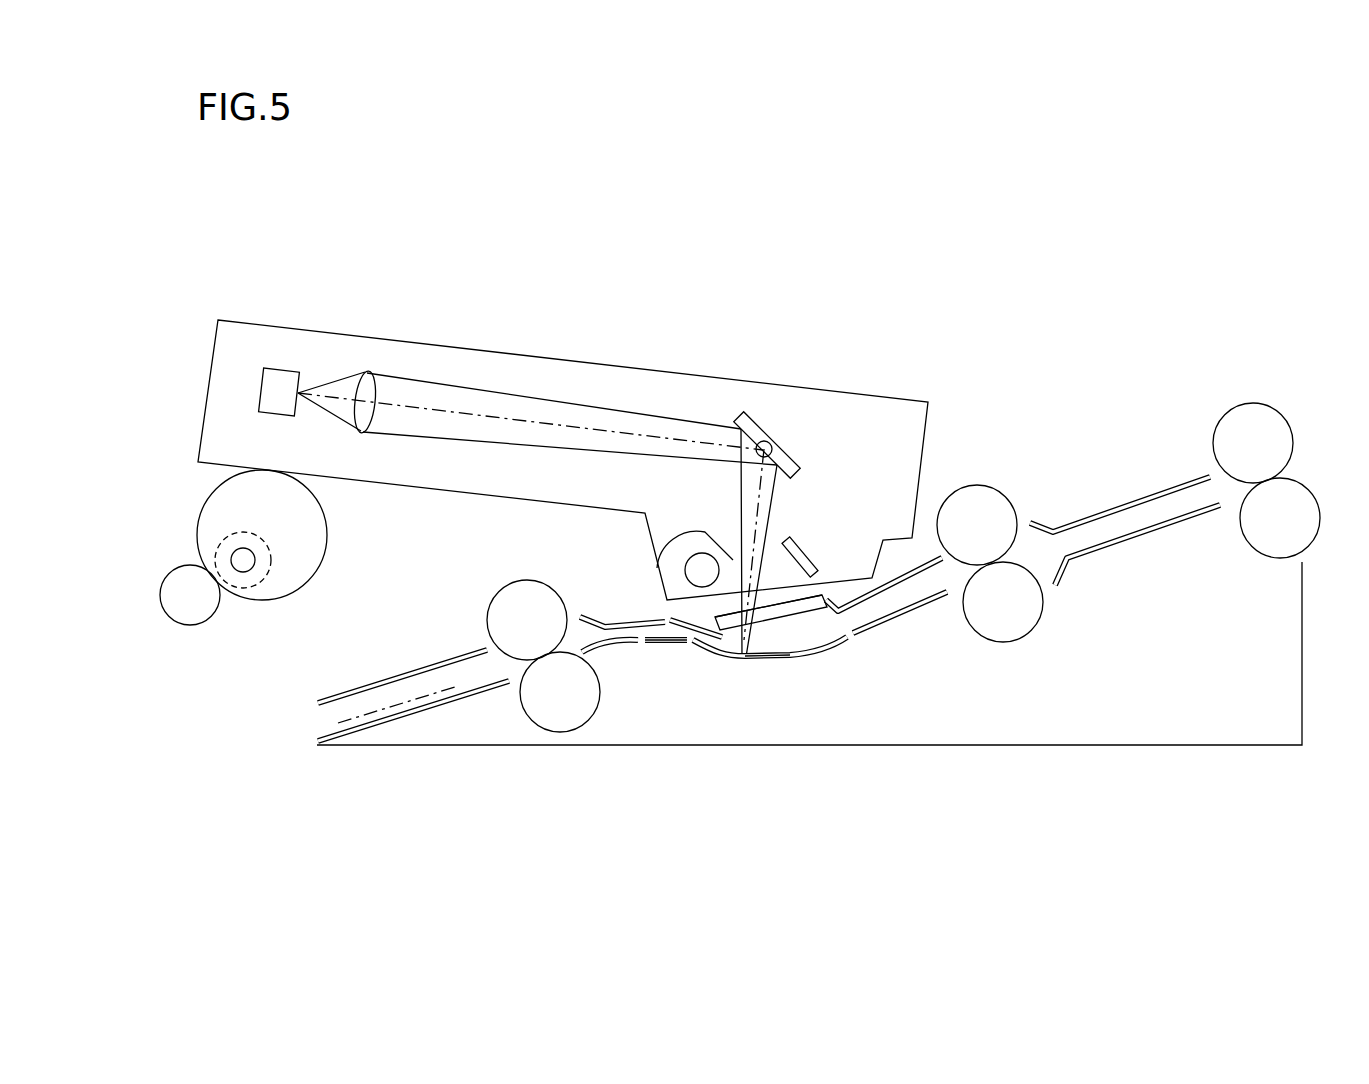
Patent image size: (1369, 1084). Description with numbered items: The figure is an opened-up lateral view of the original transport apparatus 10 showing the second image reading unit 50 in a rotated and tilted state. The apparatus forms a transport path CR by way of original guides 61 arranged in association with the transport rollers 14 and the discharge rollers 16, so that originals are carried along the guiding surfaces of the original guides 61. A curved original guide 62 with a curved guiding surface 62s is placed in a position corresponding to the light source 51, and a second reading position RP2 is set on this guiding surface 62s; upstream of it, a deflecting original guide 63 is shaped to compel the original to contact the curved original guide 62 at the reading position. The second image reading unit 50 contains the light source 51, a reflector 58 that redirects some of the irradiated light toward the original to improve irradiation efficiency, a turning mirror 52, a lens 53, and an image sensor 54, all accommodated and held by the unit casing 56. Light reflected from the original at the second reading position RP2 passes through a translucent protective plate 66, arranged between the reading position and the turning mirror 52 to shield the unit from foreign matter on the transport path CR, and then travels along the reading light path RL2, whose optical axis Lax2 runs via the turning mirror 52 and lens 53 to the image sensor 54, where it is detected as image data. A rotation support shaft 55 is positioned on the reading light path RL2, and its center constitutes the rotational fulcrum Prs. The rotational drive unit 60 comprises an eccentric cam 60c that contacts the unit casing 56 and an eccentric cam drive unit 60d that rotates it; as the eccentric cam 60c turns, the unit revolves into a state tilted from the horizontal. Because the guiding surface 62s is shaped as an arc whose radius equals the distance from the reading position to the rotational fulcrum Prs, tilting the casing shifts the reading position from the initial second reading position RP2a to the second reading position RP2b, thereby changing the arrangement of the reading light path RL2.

The original transport apparatus 10 is at (1103, 451).
The transport rollers 14 is at (563, 710).
The discharge rollers 16 is at (1267, 535).
The second image reading unit 50 is at (196, 342).
The light source 51 is at (700, 568).
The turning mirror 52 is at (748, 421).
The lens 53 is at (358, 387).
The image sensor 54 is at (279, 380).
The rotation support shaft 55 is at (771, 444).
The unit casing 56 is at (498, 348).
The reflector 58 is at (800, 552).
The rotational drive unit 60 is at (230, 653).
The eccentric cam 60c is at (267, 592).
The eccentric cam drive unit 60d is at (180, 622).
The original guides 61 is at (482, 687).
The curved original guide 62 is at (782, 658).
The guiding surface 62s is at (803, 642).
The deflecting original guide 63 is at (655, 627).
The translucent protective plate 66 is at (805, 613).
The optical axis Lax2 is at (437, 405).
The reading light path RL2 is at (573, 405).
The rotational fulcrum Prs is at (795, 458).
The transport path CR is at (413, 700).
The second reading position RP2 is at (720, 787).
The second reading position RP2a is at (757, 653).
The second reading position RP2b is at (742, 645).